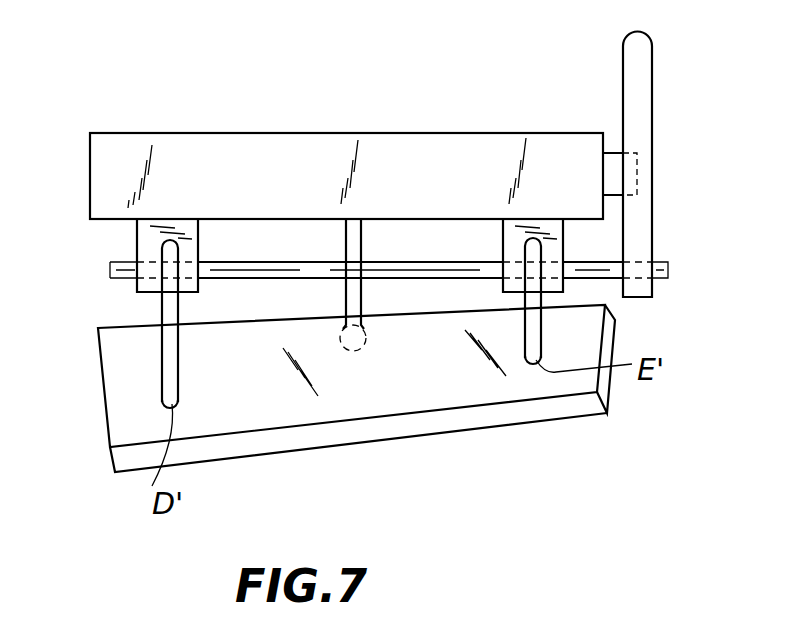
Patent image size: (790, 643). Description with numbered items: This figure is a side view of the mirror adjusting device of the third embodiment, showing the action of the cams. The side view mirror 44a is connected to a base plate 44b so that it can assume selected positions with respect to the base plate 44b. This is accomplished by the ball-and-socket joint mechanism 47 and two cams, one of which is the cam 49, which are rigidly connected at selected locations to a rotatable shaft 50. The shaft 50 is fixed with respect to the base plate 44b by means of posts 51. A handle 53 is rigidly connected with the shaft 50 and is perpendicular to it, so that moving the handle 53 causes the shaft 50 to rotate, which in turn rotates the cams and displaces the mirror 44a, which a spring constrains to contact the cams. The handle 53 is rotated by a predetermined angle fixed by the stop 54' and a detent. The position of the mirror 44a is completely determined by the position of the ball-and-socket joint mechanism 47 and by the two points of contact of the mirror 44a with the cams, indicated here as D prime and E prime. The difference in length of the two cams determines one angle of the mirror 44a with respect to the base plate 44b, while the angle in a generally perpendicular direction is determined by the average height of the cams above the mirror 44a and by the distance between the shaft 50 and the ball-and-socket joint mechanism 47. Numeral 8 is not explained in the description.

The base plate 44b is at (154, 134).
The side view mirror 44a is at (136, 408).
The post 51 is at (148, 243).
The pin 8 is at (176, 348).
The cam 49 is at (530, 322).
The ball-and-socket joint mechanism 47 is at (352, 306).
The rotatable shaft 50 is at (660, 269).
The handle 53 is at (630, 44).
The stop 54' is at (657, 177).